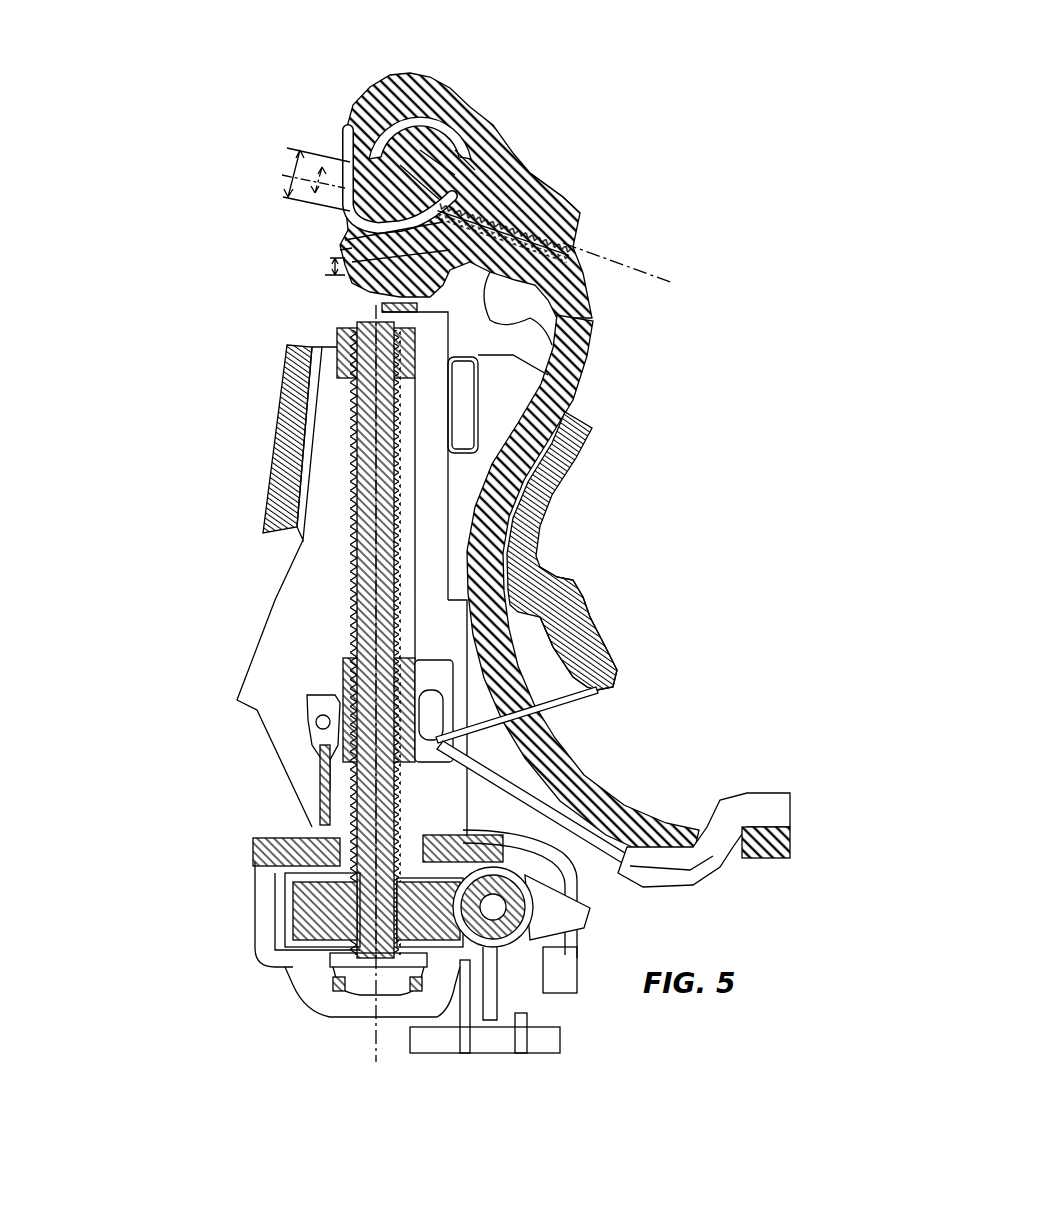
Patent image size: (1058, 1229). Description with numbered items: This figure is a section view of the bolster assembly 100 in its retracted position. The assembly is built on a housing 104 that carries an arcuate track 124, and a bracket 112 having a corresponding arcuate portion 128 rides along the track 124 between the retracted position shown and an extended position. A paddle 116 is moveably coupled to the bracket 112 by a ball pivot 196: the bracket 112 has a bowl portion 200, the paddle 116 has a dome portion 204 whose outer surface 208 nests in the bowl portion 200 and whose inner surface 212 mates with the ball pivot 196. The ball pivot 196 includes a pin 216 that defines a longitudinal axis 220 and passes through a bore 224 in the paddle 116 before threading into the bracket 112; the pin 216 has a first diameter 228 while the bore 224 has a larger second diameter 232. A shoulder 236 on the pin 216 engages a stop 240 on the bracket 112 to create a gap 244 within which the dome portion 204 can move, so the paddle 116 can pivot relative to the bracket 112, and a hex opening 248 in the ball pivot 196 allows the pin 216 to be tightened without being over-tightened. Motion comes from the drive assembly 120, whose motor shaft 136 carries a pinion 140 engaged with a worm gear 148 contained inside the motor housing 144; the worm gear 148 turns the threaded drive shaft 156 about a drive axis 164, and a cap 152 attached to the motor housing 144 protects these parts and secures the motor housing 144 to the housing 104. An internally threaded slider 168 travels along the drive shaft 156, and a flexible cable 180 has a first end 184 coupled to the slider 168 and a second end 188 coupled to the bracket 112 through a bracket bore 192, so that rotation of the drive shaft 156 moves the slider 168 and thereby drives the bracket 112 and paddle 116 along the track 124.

The bolster assembly 100 is at (120, 153).
The housing 104 is at (277, 437).
The bracket 112 is at (565, 345).
The paddle 116 is at (437, 130).
The drive assembly 120 is at (200, 1030).
The track 124 is at (530, 523).
The arcuate portion 128 is at (497, 643).
The motor shaft 136 is at (548, 928).
The pinion 140 is at (520, 903).
The motor housing 144 is at (540, 1033).
The worm gear 148 is at (307, 915).
The cap 152 is at (270, 847).
The drive shaft 156 is at (367, 617).
The drive axis 164 is at (377, 573).
The slider 168 is at (352, 677).
The flexible cable 180 is at (527, 787).
The first end 184 is at (433, 723).
The second end 188 is at (727, 827).
The bracket bore 192 is at (747, 860).
The ball pivot 196 is at (350, 130).
The bowl portion 200 is at (463, 197).
The dome portion 204 is at (432, 78).
The outer surface 208 is at (360, 293).
The inner surface 212 is at (343, 230).
The pin 216 is at (577, 237).
The longitudinal axis 220 is at (673, 283).
The bore 224 is at (463, 173).
The first diameter 228 is at (320, 165).
The second diameter 232 is at (298, 160).
The shoulder 236 is at (513, 190).
The stop 240 is at (530, 202).
The gap 244 is at (330, 270).
The hex opening 248 is at (338, 236).